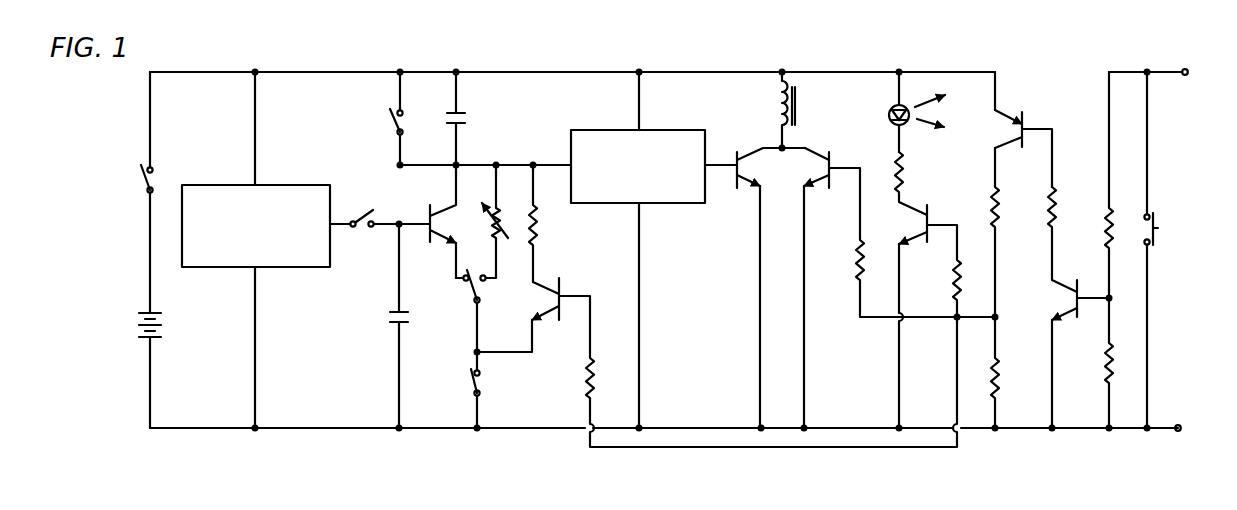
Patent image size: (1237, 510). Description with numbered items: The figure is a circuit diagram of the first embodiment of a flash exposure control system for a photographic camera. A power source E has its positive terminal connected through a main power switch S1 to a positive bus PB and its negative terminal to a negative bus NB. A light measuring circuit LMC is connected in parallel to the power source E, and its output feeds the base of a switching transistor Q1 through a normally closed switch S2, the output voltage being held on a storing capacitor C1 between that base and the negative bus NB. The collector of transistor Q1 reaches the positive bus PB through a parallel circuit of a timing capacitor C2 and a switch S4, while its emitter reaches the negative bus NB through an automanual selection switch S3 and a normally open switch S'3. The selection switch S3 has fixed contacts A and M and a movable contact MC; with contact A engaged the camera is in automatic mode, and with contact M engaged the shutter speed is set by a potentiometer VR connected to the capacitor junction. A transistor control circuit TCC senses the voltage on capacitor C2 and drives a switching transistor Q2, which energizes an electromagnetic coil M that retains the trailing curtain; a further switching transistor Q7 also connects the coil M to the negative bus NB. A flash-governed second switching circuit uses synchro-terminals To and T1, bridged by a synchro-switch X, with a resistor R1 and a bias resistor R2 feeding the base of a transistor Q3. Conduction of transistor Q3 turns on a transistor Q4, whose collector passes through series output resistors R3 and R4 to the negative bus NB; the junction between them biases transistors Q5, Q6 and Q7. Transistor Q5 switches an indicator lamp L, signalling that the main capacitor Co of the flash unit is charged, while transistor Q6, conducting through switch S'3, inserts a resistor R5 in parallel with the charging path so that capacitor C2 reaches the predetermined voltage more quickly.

The positive bus PB is at (552, 72).
The negative bus NB is at (315, 430).
The main power switch S1 is at (143, 178).
The power source E is at (138, 320).
The light measuring circuit LMC is at (218, 185).
The switch S2 is at (365, 230).
The storing capacitor C1 is at (392, 317).
The switch S4 is at (392, 115).
The timing capacitor C2 is at (465, 117).
The switching transistor Q1 is at (447, 205).
The fixed contact / electromagnetic coil M is at (465, 270).
The potentiometer VR is at (500, 226).
The movable contact MC is at (484, 287).
The fixed contact A is at (465, 287).
The automanual selection switch S3 is at (468, 293).
The switch S'3 is at (509, 390).
The resistor R5 is at (538, 218).
The switching transistor Q6 is at (562, 292).
The main capacitor Co is at (663, 478).
The transistor control circuit TCC is at (607, 130).
The switching transistor Q2 is at (748, 185).
The switching transistor Q7 is at (829, 150).
The indicator lamp L is at (890, 112).
The switching transistor Q5 is at (919, 207).
The switching transistor Q4 is at (1008, 118).
The output resistor R3 is at (997, 207).
The output resistor R4 is at (999, 378).
The switching transistor Q3 is at (1075, 300).
The resistor R1 is at (1107, 229).
The bias resistor R2 is at (1105, 355).
The synchro-switch X is at (1160, 228).
The synchro-terminal T1 is at (1167, 71).
The synchro-terminal To is at (1193, 427).